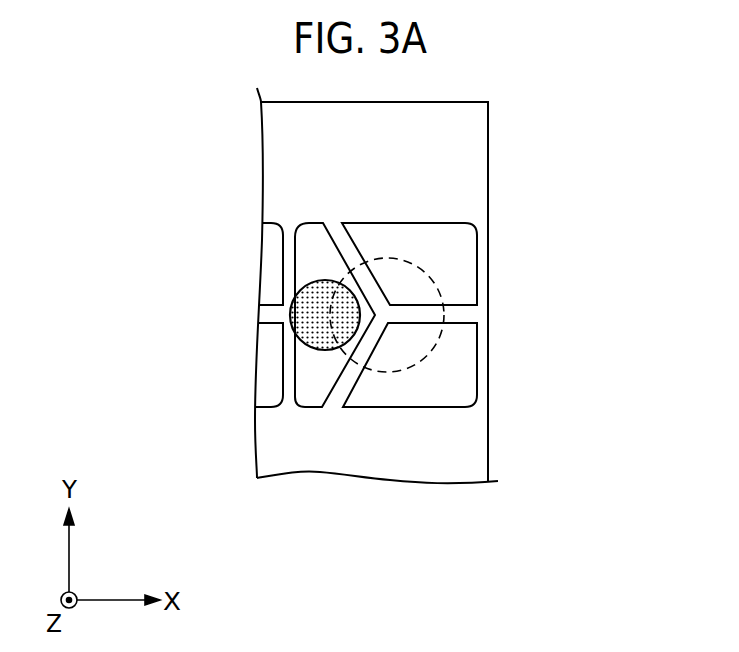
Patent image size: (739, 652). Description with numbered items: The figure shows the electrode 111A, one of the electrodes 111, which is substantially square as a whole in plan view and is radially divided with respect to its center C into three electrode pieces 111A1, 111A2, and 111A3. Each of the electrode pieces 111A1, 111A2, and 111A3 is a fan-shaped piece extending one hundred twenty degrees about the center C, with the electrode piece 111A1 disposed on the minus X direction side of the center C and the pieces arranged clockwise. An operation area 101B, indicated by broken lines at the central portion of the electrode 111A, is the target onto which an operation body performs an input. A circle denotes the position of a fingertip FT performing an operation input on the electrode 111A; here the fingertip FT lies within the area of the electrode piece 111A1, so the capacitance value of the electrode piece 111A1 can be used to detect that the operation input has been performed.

The electrode piece 111A1 is at (313, 228).
The electrode piece 111A2 is at (468, 250).
The electrode piece 111A3 is at (460, 342).
The electrode 111A is at (604, 340).
The electrode 111 is at (476, 286).
The fingertip FT is at (316, 349).
The center C is at (388, 328).
The operation area 101B is at (386, 372).